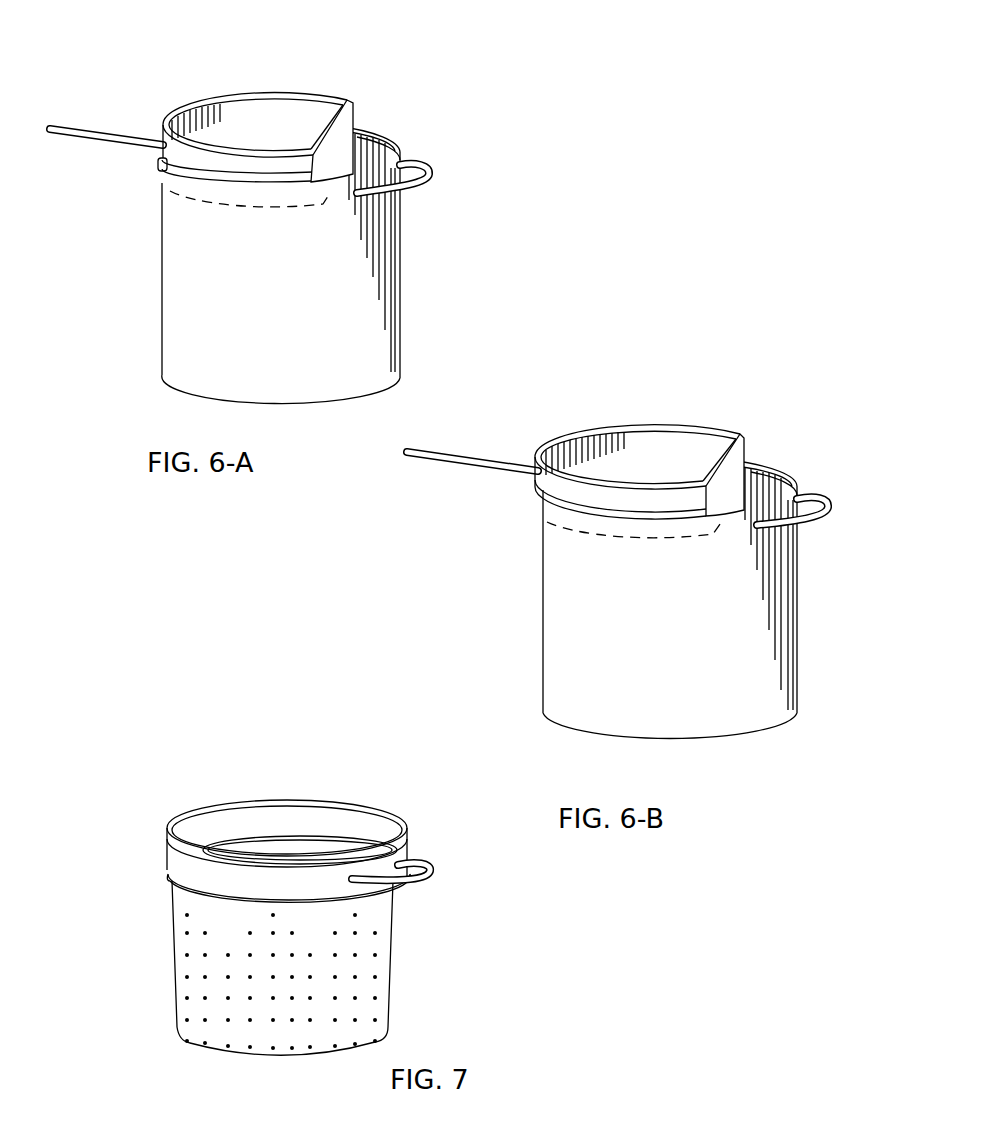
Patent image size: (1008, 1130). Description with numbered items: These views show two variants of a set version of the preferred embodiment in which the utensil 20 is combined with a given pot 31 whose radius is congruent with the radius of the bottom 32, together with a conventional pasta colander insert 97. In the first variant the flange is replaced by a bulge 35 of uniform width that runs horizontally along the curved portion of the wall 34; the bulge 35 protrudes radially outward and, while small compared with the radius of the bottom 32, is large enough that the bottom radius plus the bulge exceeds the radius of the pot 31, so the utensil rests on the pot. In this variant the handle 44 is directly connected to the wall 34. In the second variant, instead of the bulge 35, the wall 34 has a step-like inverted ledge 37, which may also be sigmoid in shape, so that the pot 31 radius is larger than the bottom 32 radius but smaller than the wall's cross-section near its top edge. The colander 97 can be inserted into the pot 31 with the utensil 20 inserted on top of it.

In FIG. 6A, the utensil 20 is at (261, 167).
In FIG. 6B, the utensil 20 is at (644, 497).
In FIG. 6A, the pot 31 is at (418, 222).
In FIG. 6B, the pot 31 is at (813, 620).
In FIG. 6A, the bottom 32 is at (225, 204).
In FIG. 6B, the bottom 32 is at (622, 540).
In FIG. 6A, the wall 34 is at (237, 113).
In FIG. 6B, the wall 34 is at (638, 440).
In FIG. 6A, the bulge 35 is at (355, 122).
In FIG. 6B, the step-like inverted ledge 37 is at (745, 452).
In FIG. 6A, the handle 44 is at (98, 128).
In FIG. 6B, the handle 44 is at (458, 466).
In FIG. 7, the pasta colander insert 97 is at (400, 935).